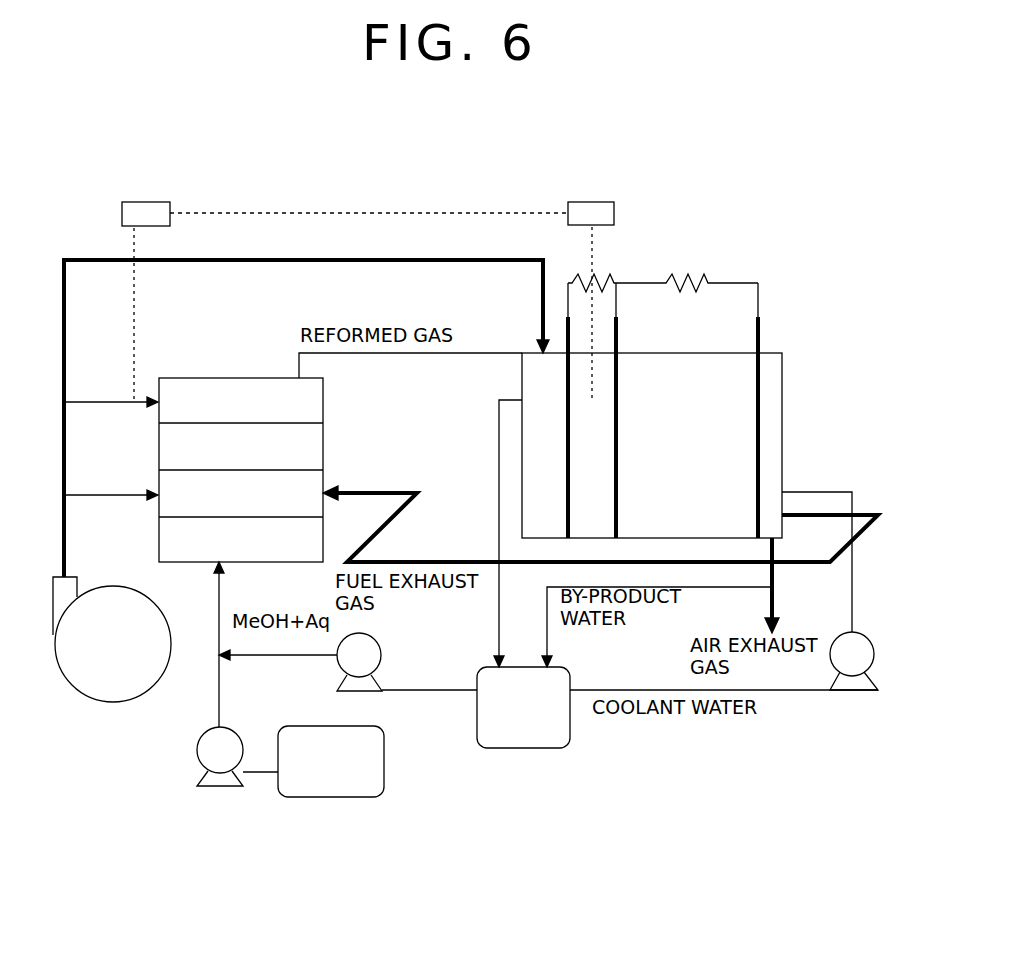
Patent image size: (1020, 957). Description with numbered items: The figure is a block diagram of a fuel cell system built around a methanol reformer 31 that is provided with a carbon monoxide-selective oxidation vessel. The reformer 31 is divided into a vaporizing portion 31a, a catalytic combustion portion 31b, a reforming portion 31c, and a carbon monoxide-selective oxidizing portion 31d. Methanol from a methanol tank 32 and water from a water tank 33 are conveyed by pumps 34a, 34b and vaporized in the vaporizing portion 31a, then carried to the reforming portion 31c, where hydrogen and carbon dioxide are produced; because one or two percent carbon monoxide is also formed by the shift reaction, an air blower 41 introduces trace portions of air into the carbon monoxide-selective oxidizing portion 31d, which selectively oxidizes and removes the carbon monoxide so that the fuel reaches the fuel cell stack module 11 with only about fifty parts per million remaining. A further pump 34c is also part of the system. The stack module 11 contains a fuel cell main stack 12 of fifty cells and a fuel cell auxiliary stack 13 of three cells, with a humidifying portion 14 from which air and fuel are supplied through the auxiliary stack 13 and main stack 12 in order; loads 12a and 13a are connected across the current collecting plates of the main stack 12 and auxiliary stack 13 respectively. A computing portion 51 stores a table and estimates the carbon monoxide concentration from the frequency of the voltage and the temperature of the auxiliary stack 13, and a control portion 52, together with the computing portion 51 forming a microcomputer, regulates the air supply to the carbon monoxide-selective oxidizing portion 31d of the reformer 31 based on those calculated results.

The fuel cell stack module 11 is at (784, 377).
The fuel cell main stack 12 is at (676, 425).
The load 12a is at (688, 268).
The fuel cell auxiliary stack 13 is at (592, 448).
The load 13a is at (580, 274).
The humidifying portion 14 is at (546, 448).
The methanol reformer 31 is at (240, 376).
The vaporizing portion 31a is at (324, 528).
The catalytic combustion portion 31b is at (324, 482).
The reforming portion 31c is at (324, 449).
The carbon monoxide-selective oxidizing portion 31d is at (324, 402).
The methanol tank 32 is at (337, 798).
The water tank 33 is at (523, 750).
The pump 34a is at (220, 788).
The pump 34b is at (382, 655).
The pump 34c is at (876, 655).
The air blower 41 is at (113, 703).
The computing portion 51 is at (616, 213).
The control portion 52 is at (146, 200).